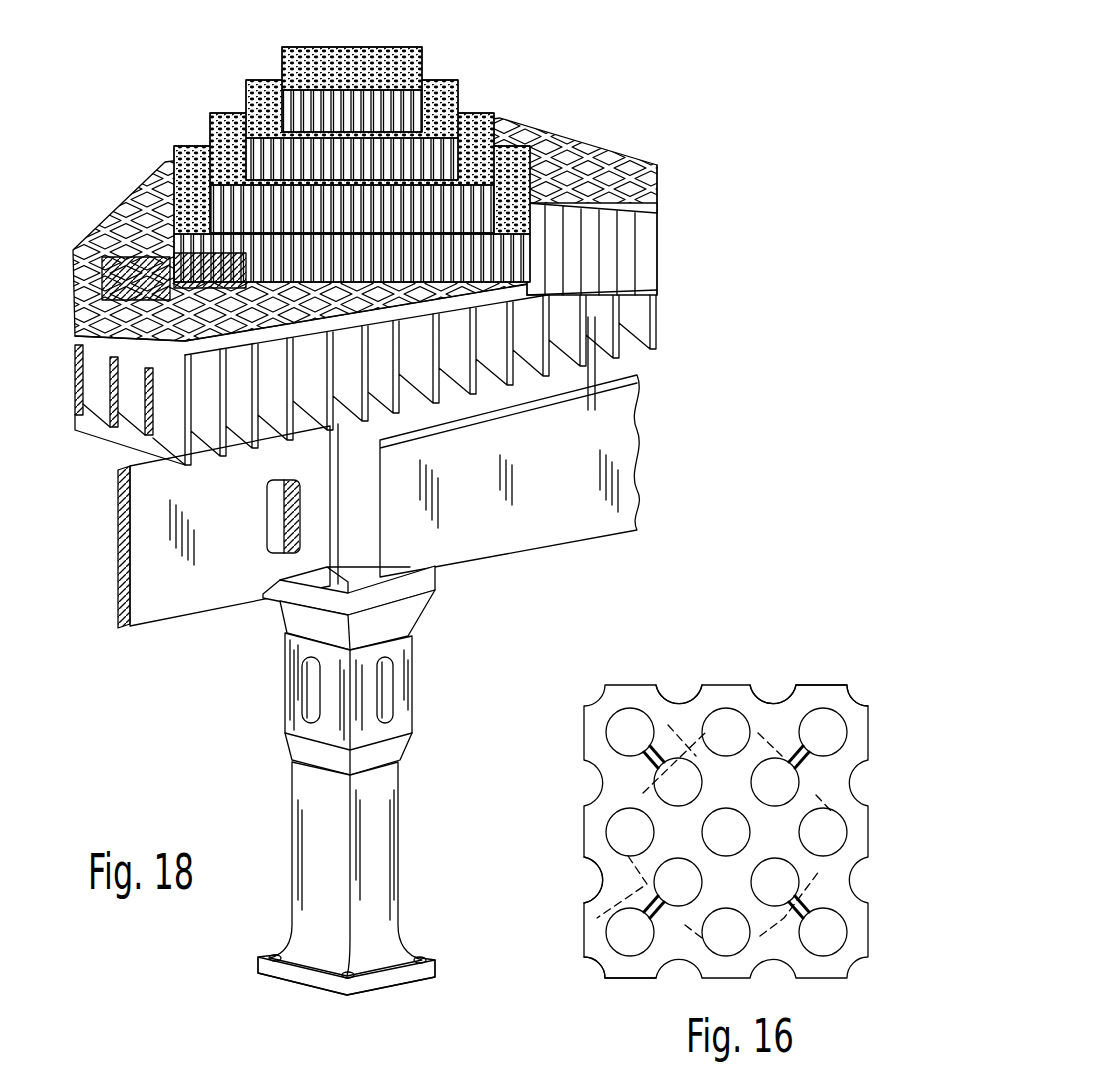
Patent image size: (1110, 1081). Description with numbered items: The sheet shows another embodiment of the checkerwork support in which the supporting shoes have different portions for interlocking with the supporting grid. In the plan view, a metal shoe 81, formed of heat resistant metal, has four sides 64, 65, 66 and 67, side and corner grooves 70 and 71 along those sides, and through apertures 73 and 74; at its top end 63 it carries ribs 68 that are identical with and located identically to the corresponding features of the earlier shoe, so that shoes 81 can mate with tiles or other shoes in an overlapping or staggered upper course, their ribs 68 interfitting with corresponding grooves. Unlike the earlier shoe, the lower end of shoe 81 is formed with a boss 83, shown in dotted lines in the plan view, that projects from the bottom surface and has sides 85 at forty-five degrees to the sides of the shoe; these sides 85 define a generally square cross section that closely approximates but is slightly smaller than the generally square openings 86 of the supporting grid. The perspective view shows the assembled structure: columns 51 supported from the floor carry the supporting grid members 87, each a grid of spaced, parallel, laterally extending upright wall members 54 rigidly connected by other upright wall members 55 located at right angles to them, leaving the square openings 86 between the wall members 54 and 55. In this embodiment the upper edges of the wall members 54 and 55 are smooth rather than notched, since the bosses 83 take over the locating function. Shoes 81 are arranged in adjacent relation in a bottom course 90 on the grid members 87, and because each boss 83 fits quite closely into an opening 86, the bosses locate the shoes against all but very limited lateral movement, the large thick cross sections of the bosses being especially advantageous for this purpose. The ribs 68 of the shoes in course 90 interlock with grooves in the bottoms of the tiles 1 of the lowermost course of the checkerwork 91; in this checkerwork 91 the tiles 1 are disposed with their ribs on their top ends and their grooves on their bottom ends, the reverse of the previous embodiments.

In FIG. 18, the tiles 1 is at (422, 60).
In FIG. 18, the checkerwork 91 is at (396, 41).
In FIG. 18, the course 90 is at (620, 188).
In FIG. 18, the wall members 54 is at (657, 342).
In FIG. 18, the openings 86 is at (110, 357).
In FIG. 18, the supporting grid members 87 is at (117, 435).
In FIG. 18, the wall members 55 is at (596, 396).
In FIG. 18, the metal shoe 81 is at (553, 280).
In FIG. 16, the metal shoe 81 is at (584, 718).
In FIG. 18, the columns 51 is at (284, 795).
In FIG. 16, the boss 83 is at (668, 725).
In FIG. 16, the through aperture 74 is at (716, 722).
In FIG. 16, the side 65 is at (722, 688).
In FIG. 16, the top end 63 is at (805, 705).
In FIG. 16, the through aperture 73 is at (834, 735).
In FIG. 16, the sides of boss 85 is at (597, 918).
In FIG. 16, the ribs 68 is at (808, 892).
In FIG. 16, the side 64 is at (584, 828).
In FIG. 16, the side 66 is at (870, 845).
In FIG. 16, the side grooves 70 is at (600, 876).
In FIG. 16, the corner grooves 71 is at (597, 960).
In FIG. 16, the side 67 is at (645, 978).